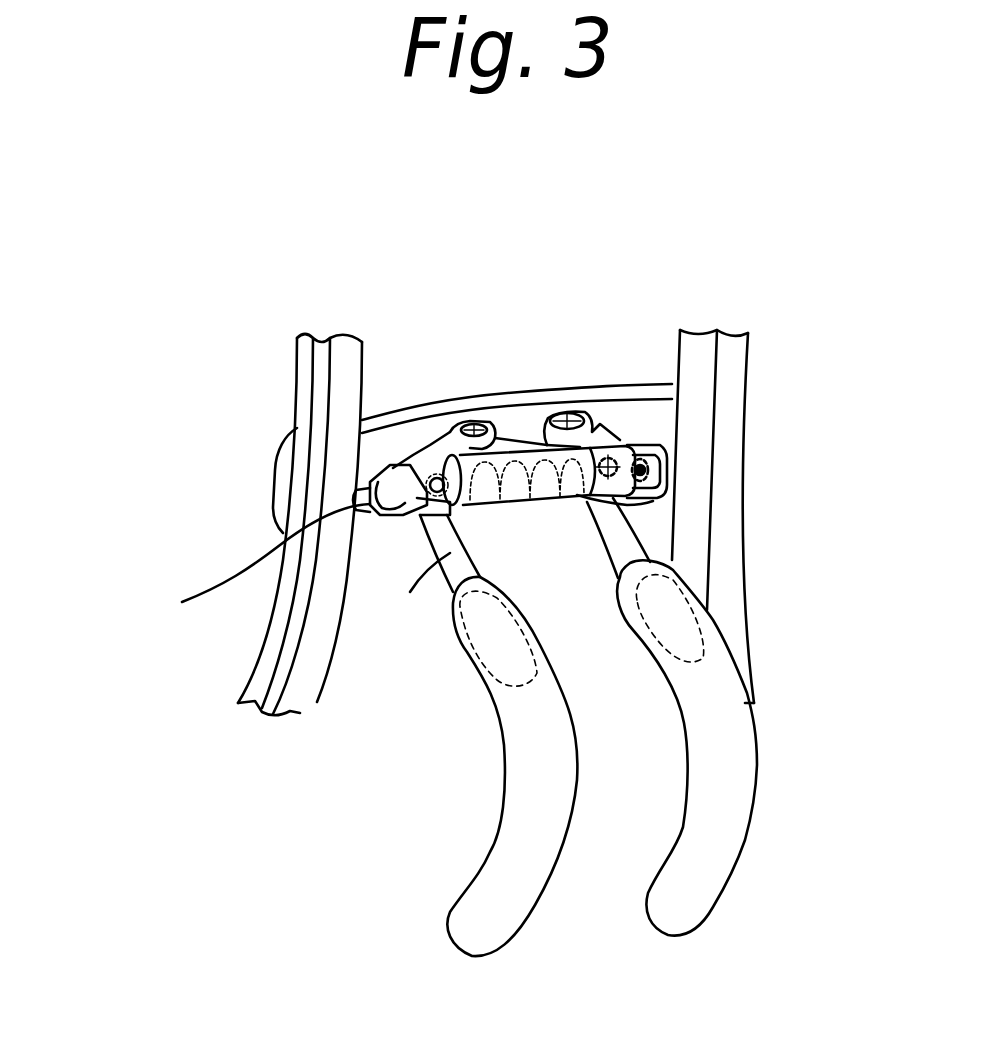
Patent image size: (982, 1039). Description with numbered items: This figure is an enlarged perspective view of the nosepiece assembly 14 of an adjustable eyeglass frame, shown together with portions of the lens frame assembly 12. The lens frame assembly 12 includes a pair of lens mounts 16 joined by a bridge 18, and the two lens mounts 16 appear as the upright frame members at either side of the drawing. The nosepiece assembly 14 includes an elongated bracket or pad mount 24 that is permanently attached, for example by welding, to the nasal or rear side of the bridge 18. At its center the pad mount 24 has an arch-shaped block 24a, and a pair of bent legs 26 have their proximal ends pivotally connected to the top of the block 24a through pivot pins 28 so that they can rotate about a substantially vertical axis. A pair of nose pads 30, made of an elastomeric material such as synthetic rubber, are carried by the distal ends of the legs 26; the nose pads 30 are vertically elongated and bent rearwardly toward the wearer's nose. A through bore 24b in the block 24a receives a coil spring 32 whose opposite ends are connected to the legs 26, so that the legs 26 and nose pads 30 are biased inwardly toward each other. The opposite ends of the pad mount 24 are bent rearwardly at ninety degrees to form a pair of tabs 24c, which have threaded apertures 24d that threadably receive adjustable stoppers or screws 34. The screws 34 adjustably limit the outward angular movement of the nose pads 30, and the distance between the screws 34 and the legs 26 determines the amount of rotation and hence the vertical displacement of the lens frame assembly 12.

The lens frame assembly 12 is at (232, 483).
The nosepiece assembly 14 is at (380, 752).
The lens mounts 16 is at (308, 366).
The bridge 18 is at (638, 400).
The pad mount 24 is at (413, 455).
The arch-shaped block 24a is at (520, 447).
The through bore 24b is at (455, 510).
The tabs 24c is at (650, 440).
The threaded apertures 24d is at (618, 494).
The bent legs 26 is at (612, 538).
The pivot pins 28 is at (467, 418).
The nose pads 30 is at (710, 863).
The coil spring 32 is at (668, 469).
The screws 34 is at (242, 566).